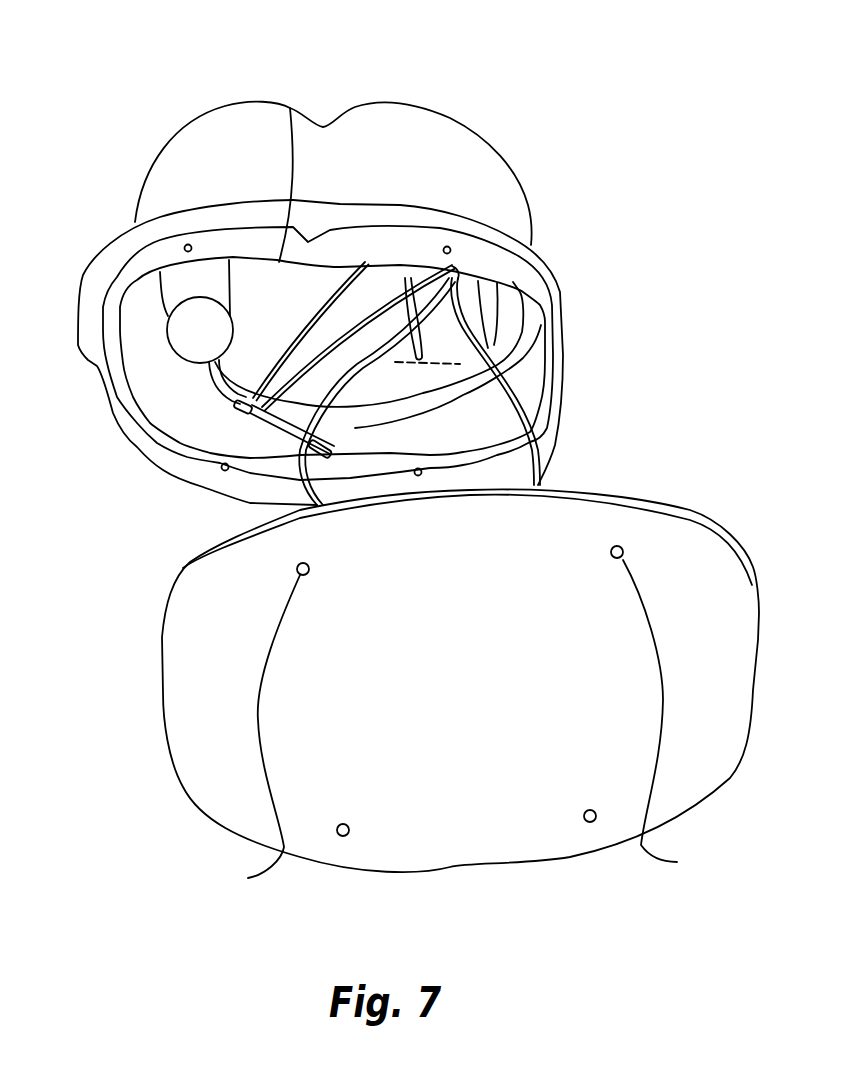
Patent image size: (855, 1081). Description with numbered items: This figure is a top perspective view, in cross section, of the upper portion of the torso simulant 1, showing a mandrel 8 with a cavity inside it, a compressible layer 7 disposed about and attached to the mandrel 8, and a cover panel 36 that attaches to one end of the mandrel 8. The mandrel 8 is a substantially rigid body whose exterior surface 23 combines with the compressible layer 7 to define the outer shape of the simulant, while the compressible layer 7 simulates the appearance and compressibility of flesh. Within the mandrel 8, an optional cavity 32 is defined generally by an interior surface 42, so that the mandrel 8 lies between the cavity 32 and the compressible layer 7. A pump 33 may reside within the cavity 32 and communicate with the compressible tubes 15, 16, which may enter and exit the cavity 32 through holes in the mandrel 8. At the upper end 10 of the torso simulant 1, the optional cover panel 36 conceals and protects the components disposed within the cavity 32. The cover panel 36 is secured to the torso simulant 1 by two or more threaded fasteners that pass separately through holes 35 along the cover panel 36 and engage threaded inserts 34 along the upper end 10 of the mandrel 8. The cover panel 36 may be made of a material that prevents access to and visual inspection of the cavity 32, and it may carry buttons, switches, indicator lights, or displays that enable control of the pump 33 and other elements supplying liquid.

The torso simulant 1 is at (192, 100).
The compressible layer 7 is at (397, 216).
The interior surface 42 is at (300, 93).
The exterior surface 23 is at (548, 306).
The upper end 10 is at (90, 362).
The cavity 32 is at (187, 397).
The pump 33 is at (170, 317).
The compressible tube 15 is at (240, 412).
The compressible tube 16 is at (334, 444).
The mandrel 8 is at (518, 283).
The threaded inserts 34 is at (185, 246).
The cover panel 36 is at (470, 800).
The holes 35 is at (340, 833).